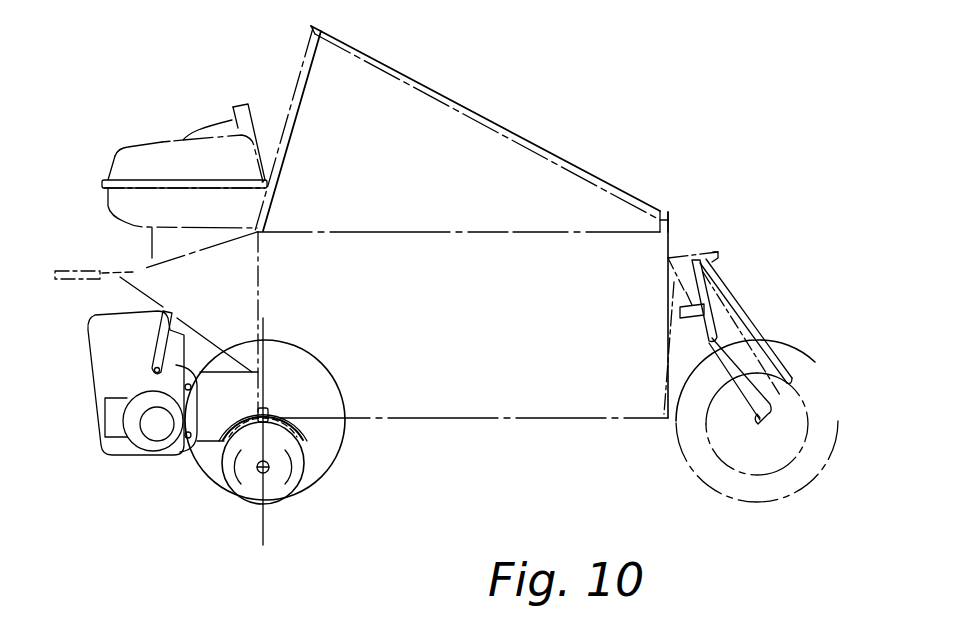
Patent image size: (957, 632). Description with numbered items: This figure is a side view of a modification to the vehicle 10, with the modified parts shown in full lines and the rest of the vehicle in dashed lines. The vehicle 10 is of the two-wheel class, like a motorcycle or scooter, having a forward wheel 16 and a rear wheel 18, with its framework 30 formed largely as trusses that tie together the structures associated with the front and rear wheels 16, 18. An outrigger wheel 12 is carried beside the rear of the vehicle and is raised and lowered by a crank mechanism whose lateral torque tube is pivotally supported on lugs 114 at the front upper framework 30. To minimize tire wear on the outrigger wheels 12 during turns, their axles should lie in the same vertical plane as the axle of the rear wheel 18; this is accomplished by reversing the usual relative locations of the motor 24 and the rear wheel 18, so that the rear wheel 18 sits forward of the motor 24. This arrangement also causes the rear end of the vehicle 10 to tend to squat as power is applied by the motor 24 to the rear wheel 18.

The vehicle 10 is at (446, 285).
The outrigger wheels 12 is at (230, 476).
The forward wheel 16 is at (700, 455).
The rear wheel 18 is at (340, 452).
The motor and case 24 is at (152, 433).
The framework 30 is at (674, 212).
The lugs 114 is at (270, 412).